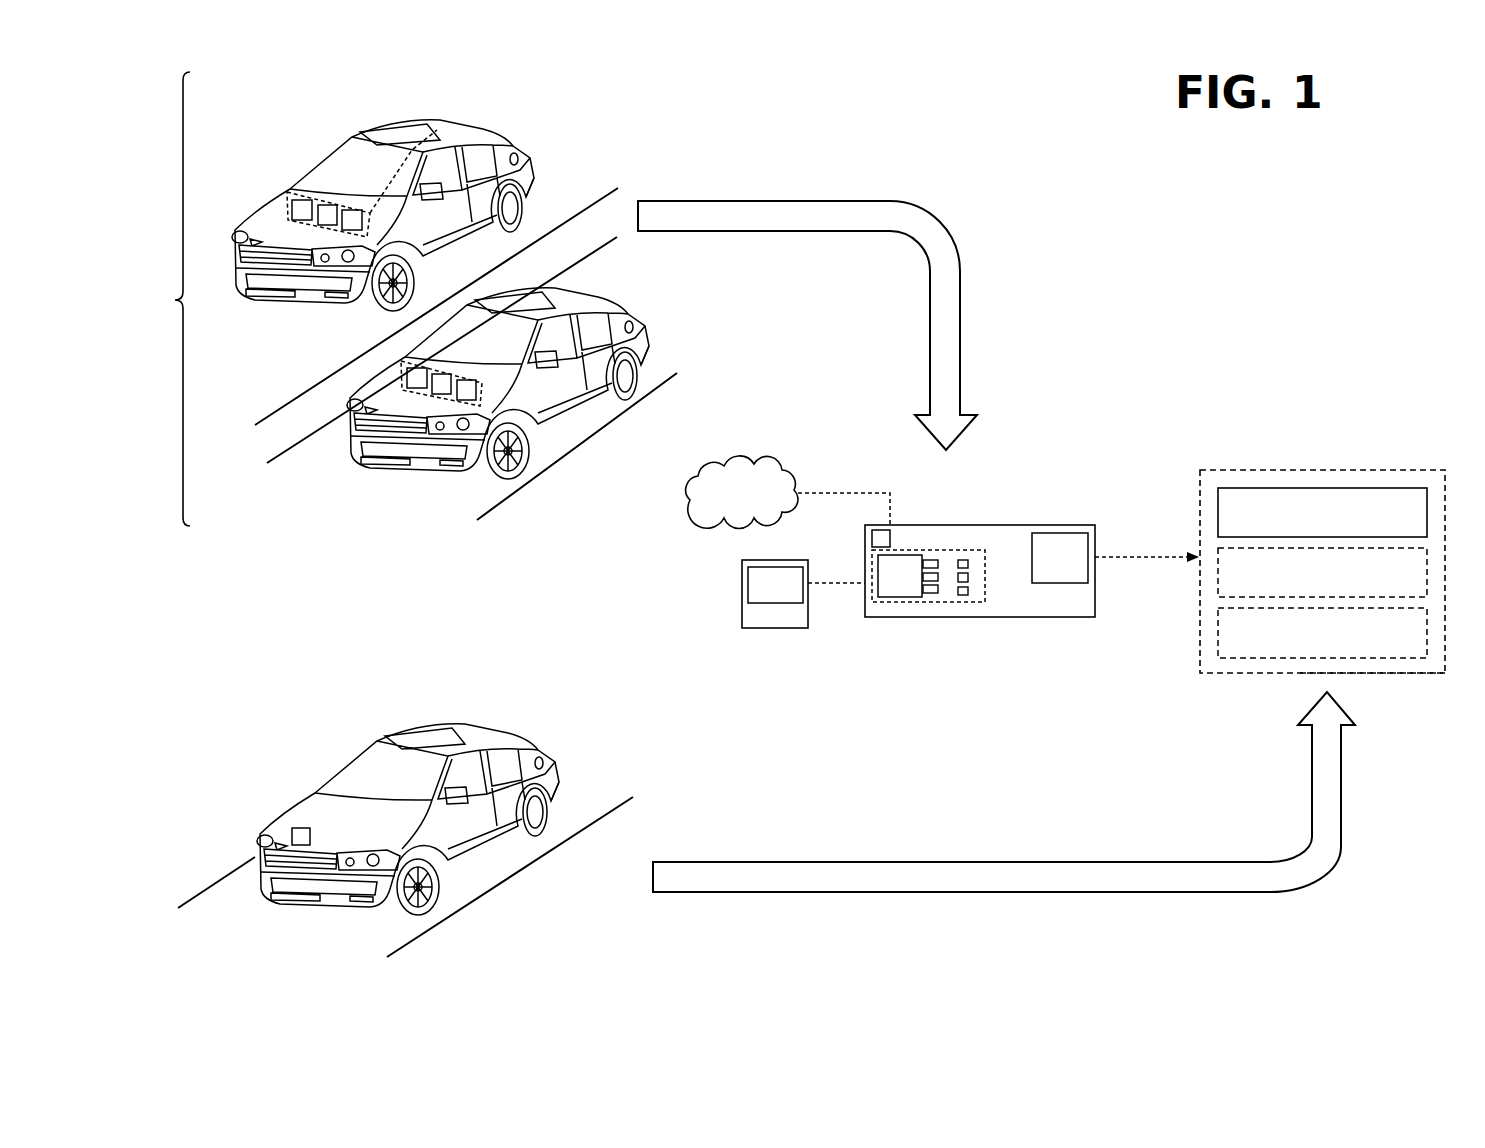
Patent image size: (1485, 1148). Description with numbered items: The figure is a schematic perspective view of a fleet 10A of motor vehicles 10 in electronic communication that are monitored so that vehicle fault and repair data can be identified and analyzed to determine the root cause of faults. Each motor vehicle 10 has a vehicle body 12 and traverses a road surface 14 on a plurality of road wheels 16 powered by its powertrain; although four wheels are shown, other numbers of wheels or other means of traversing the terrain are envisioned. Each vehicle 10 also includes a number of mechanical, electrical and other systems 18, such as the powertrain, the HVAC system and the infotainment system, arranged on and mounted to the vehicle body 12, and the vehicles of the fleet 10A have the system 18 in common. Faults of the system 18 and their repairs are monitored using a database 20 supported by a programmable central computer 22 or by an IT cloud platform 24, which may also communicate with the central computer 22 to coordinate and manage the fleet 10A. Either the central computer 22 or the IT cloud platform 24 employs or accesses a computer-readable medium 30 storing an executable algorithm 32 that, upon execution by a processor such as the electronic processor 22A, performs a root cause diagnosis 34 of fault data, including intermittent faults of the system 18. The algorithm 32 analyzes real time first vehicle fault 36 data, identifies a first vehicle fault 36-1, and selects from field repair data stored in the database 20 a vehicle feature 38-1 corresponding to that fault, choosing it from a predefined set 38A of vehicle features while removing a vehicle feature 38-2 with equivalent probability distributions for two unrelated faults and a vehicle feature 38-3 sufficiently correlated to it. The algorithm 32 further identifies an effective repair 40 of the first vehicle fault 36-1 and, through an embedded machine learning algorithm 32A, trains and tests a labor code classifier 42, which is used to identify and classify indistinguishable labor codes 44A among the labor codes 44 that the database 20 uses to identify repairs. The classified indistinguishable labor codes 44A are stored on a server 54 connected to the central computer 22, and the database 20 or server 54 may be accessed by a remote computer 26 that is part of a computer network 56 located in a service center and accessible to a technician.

The motor vehicle 10 is at (437, 100).
The fleet 10A is at (156, 299).
The vehicle body 12 is at (500, 182).
The road surface 14 is at (234, 336).
The road wheels 16 is at (528, 210).
The system 18 is at (240, 238).
The database 20 is at (871, 538).
The central computer 22 is at (981, 520).
The electronic processor 22A is at (1040, 568).
The IT cloud platform 24 is at (727, 504).
The computer 26 is at (1376, 488).
The computer-readable medium 30 is at (902, 609).
The executable algorithm 32 is at (887, 587).
The machine learning algorithm 32A is at (969, 560).
The root cause diagnosis 34 is at (969, 578).
The first vehicle fault 36 is at (969, 596).
The first vehicle fault 36-1 is at (287, 837).
The vehicle feature 38-1 is at (327, 203).
The vehicle feature 38-2 is at (298, 200).
The vehicle feature 38-3 is at (351, 208).
The predefined set of vehicle features 38A is at (437, 128).
The effective repair 40 is at (928, 560).
The labor code classifier 42 is at (933, 573).
The labor codes 44 is at (932, 594).
The indistinguishable labor codes 44A is at (755, 596).
The server 54 is at (742, 621).
The computer network 56 is at (1378, 682).